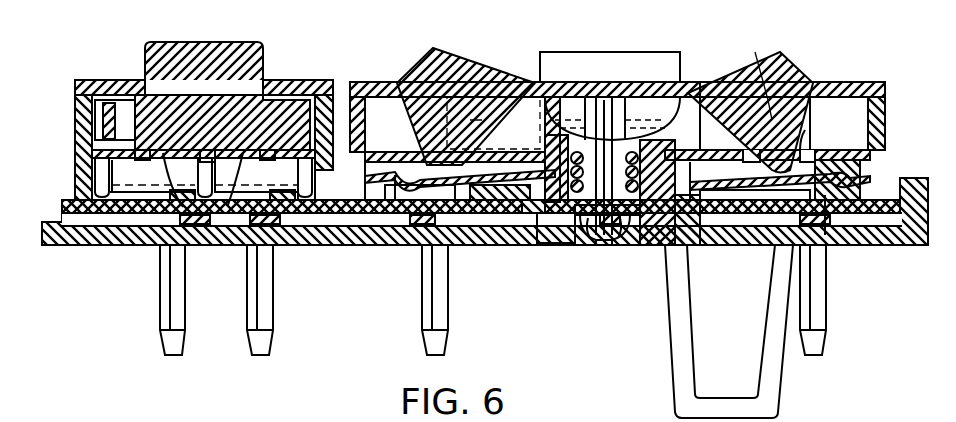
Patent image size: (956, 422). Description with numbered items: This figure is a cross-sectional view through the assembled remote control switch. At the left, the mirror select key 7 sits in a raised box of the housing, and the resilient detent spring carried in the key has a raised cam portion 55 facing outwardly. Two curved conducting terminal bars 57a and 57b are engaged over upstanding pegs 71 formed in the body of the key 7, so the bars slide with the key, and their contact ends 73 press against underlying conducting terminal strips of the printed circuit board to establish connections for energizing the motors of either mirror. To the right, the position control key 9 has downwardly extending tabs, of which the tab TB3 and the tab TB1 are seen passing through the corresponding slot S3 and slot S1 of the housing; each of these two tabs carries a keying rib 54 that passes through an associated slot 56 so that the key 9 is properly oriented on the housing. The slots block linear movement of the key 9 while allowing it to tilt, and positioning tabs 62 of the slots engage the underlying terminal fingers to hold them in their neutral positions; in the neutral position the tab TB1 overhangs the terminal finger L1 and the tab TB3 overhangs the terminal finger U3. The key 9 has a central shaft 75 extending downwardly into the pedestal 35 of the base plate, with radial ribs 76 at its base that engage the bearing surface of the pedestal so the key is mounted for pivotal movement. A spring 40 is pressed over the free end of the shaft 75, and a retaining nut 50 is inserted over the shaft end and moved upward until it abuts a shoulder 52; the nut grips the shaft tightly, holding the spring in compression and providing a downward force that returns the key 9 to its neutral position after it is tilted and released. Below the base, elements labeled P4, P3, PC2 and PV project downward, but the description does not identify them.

The mirror select key 7 is at (191, 55).
The raised cam portion 55 is at (103, 120).
The conducting terminal bar 57a is at (130, 185).
The upstanding peg 71 is at (240, 180).
The conducting terminal bar 57b is at (288, 195).
The tab TB3 is at (432, 50).
The slot S3 is at (412, 157).
The keying rib 54 is at (621, 81).
The terminal finger U3 is at (475, 185).
The positioning tab 62 is at (392, 180).
The contact end 73 is at (398, 176).
The central shaft 75 is at (608, 120).
The radial rib 76 is at (575, 140).
The spring 40 is at (560, 218).
The retaining nut 50 is at (588, 235).
The shoulder 52 is at (625, 238).
The pedestal 35 is at (548, 140).
The position control key 9 is at (735, 82).
The tab TB1 is at (822, 92).
The slot S1 is at (805, 130).
The slot 56 is at (740, 152).
The pin P4 is at (168, 312).
The pin P3 is at (262, 312).
The pin PC2 is at (435, 305).
The pin PV is at (820, 300).
The terminal finger L1 is at (743, 180).